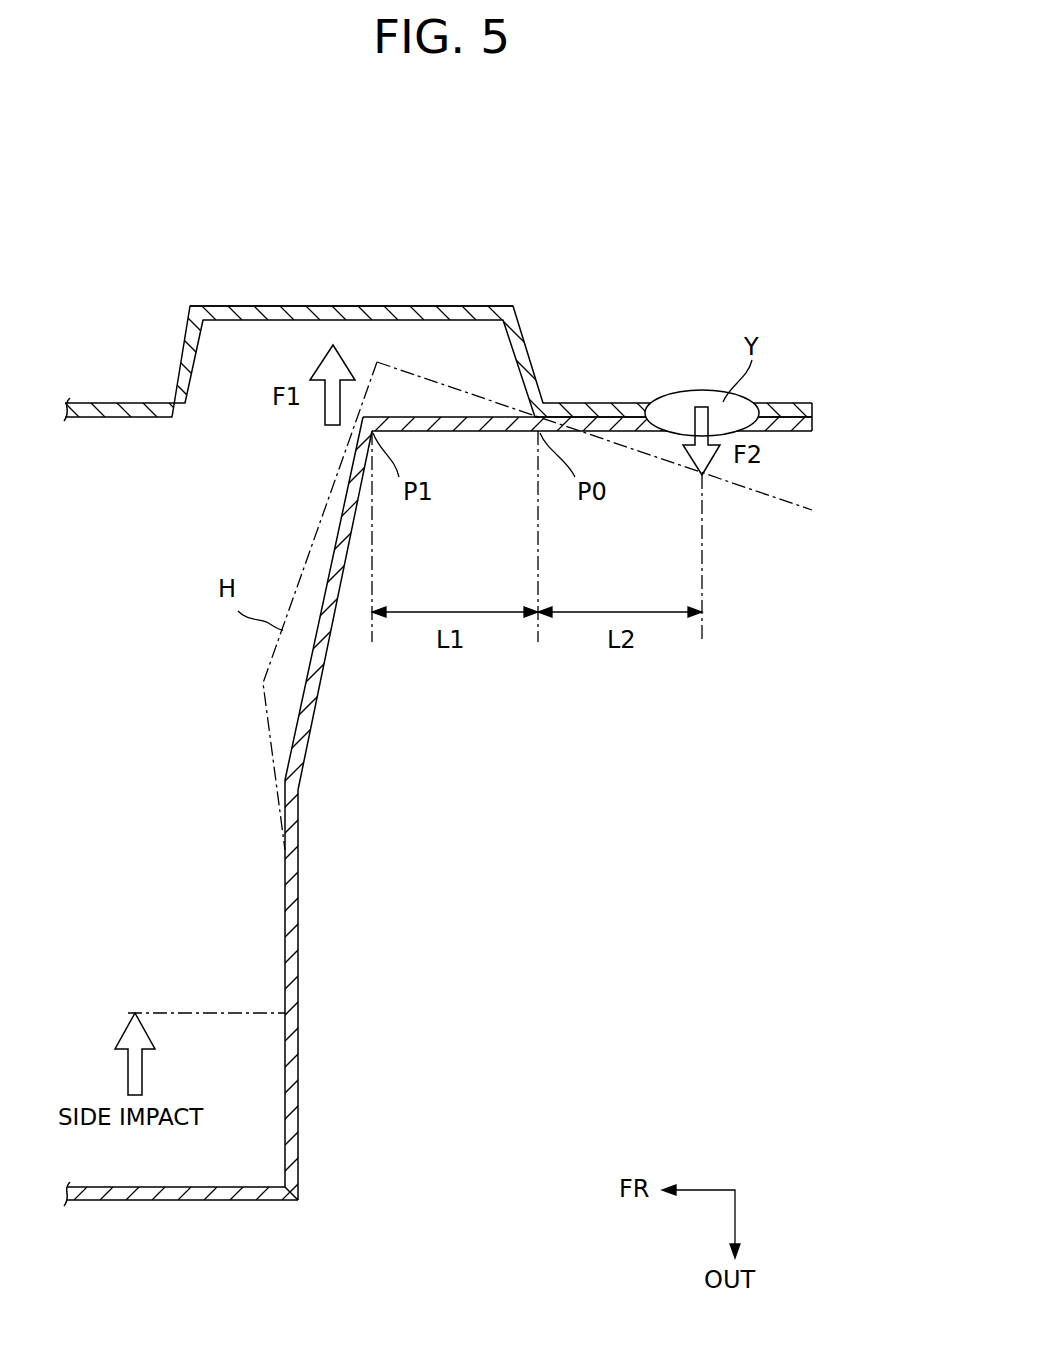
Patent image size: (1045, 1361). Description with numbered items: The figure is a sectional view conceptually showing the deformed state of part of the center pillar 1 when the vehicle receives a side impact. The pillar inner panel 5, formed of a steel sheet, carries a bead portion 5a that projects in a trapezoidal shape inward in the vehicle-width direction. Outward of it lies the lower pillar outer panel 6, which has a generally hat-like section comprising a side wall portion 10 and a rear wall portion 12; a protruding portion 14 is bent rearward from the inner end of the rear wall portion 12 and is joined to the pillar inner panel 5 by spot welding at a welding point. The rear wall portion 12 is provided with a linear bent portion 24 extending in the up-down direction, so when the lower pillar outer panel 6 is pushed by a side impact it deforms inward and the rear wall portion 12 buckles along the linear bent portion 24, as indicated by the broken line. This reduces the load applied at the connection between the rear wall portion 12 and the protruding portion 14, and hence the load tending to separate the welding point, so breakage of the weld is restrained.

The center pillar 1 is at (168, 228).
The pillar inner panel 5 is at (114, 402).
The bead portion 5a is at (331, 304).
The protruding portion 14 is at (455, 433).
The linear bent portion 24 is at (299, 790).
The rear wall portion 12 is at (299, 1072).
The side wall portion 10 is at (152, 1199).
The lower pillar outer panel 6 is at (258, 1210).